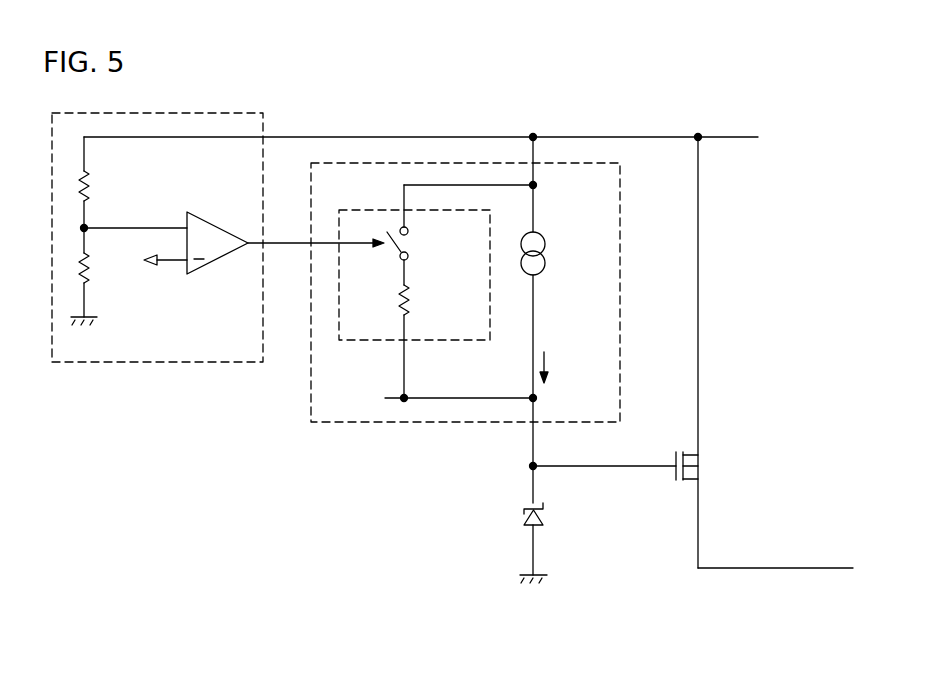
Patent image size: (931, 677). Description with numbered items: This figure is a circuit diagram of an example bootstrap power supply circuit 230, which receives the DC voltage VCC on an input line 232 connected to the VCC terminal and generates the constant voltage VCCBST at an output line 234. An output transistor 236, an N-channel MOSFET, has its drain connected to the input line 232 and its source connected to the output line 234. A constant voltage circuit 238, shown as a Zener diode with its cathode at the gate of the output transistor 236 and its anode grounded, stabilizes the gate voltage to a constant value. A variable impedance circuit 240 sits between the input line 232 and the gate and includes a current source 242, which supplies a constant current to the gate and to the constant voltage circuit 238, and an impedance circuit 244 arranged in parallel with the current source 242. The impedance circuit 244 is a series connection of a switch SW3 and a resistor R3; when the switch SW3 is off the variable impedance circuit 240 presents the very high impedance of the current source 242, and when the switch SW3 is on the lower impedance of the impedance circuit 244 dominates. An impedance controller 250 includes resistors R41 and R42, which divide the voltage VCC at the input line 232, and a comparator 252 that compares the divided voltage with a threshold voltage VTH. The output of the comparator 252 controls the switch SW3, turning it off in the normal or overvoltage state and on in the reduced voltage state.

The bootstrap power supply circuit 230 is at (484, 666).
The input line 232 is at (736, 135).
The output line 234 is at (745, 571).
The output transistor 236 is at (702, 466).
The constant voltage circuit 238 is at (548, 517).
The variable impedance circuit 240 is at (360, 425).
The current source 242 is at (546, 262).
The impedance circuit 244 is at (360, 343).
The impedance controller 250 is at (119, 363).
The comparator 252 is at (221, 262).
The resistor R41 is at (96, 188).
The resistor R42 is at (94, 270).
The resistor R3 is at (412, 300).
The switch SW3 is at (418, 247).